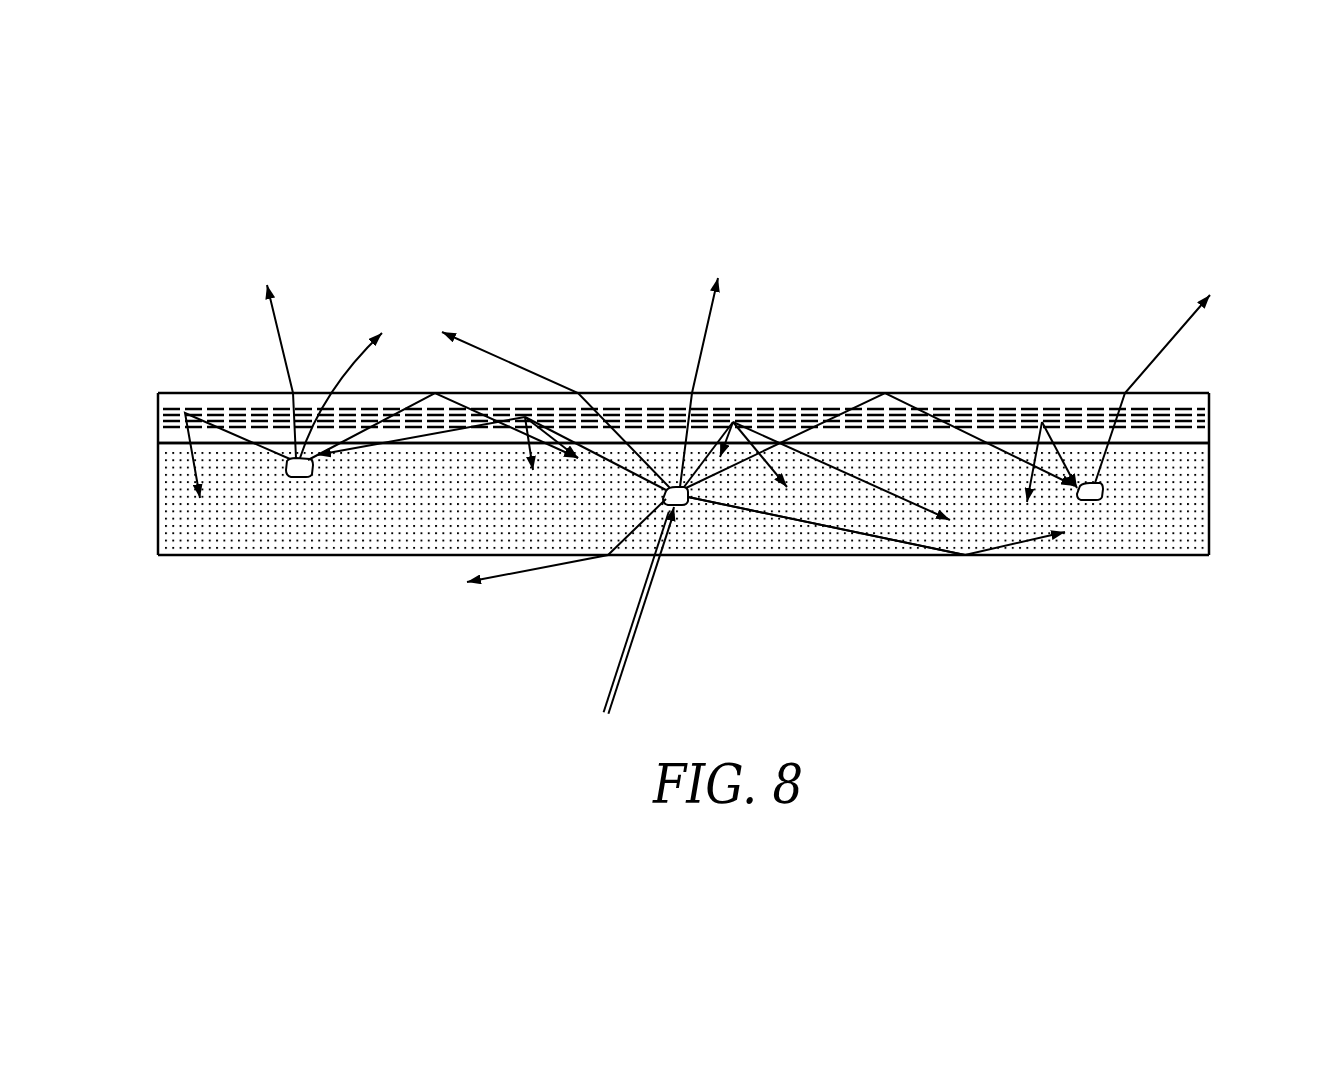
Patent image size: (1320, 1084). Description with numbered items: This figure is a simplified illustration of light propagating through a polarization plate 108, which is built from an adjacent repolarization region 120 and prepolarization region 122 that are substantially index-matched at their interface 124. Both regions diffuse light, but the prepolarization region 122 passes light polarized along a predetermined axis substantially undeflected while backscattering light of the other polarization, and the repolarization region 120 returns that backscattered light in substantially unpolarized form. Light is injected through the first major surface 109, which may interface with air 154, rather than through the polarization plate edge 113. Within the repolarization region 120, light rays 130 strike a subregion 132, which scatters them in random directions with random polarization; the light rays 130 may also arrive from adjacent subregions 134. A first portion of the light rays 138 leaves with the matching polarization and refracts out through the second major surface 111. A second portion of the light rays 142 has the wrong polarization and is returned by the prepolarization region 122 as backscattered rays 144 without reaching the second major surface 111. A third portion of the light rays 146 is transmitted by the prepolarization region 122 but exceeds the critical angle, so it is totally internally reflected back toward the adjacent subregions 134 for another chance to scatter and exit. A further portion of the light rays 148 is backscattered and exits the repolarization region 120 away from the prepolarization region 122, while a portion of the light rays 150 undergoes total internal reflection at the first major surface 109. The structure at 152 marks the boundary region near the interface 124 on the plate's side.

The polarization plate 108 is at (1062, 244).
The first major surface 109 is at (753, 558).
The second major surface 111 is at (772, 393).
The polarization plate edge 113 is at (158, 473).
The repolarization region 120 is at (1212, 518).
The prepolarization region 122 is at (1212, 398).
The interface 124 is at (1212, 444).
The light rays 130 is at (619, 667).
The subregion 132 is at (684, 507).
The adjacent subregions 134 is at (297, 478).
The first portion of the light rays 138 is at (514, 363).
The second portion of the light rays 142 is at (733, 422).
The backscattered rays 144 is at (414, 403).
The third portion of the light rays 146 is at (901, 396).
The further portion of the light rays 148 is at (540, 569).
The light rays undergoing TIR 150 is at (873, 538).
The interface 152 is at (1168, 443).
The air 154 is at (432, 295).